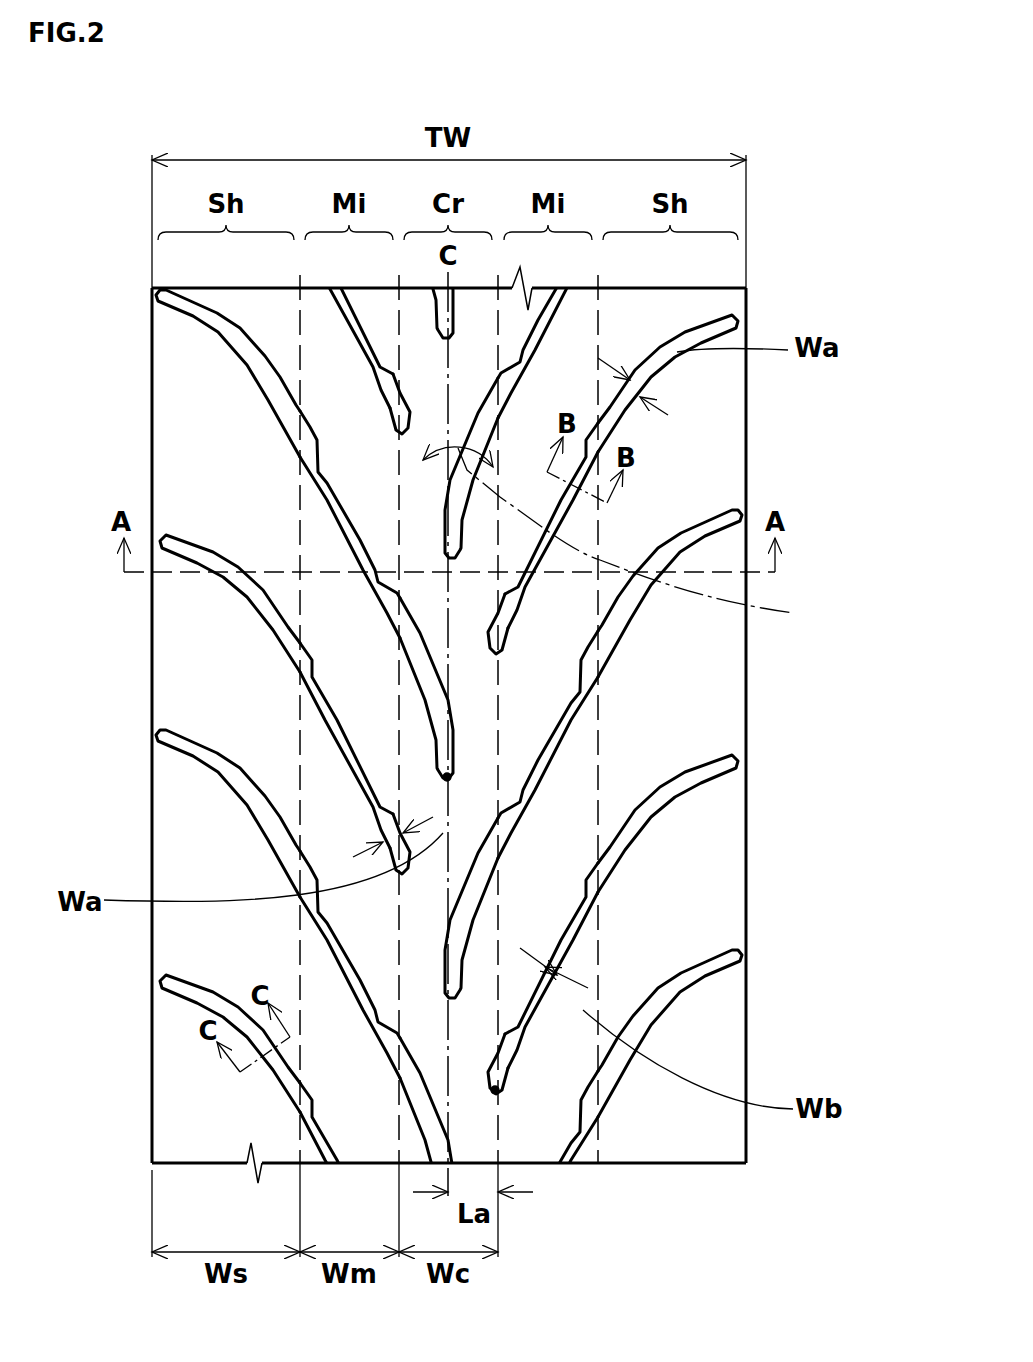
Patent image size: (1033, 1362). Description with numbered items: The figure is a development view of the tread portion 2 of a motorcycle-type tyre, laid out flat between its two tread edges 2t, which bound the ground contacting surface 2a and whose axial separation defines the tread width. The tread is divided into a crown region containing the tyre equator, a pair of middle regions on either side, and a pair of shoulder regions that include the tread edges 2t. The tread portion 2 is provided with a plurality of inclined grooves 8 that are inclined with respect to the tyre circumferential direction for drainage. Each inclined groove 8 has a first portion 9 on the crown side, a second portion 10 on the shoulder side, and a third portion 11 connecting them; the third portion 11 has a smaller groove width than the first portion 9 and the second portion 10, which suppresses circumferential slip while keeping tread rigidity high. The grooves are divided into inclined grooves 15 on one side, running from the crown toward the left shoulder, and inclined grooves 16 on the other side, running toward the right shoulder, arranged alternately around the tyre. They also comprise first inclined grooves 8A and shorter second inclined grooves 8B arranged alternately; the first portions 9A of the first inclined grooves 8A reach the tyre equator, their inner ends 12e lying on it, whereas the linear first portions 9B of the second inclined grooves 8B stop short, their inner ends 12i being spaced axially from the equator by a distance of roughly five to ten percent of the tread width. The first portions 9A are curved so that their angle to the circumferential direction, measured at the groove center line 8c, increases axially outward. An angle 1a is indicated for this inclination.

The tread portion 2 is at (718, 130).
The ground contacting surface 2a is at (680, 1130).
The tread edge 2t is at (152, 344).
The angle θ1a of groove 1a is at (267, 421).
The inclined groove 8 is at (62, 700).
The first inclined groove 8A is at (283, 407).
The second inclined groove 8B is at (250, 612).
The groove center line 8c is at (645, 539).
The first portion 9 is at (387, 826).
The first portion of first inclined groove 9A is at (455, 988).
The first portion of second inclined groove 9B is at (520, 1040).
The second portion 10 is at (288, 637).
The third portion 11 is at (340, 743).
The inner end of first inclined groove 12e is at (448, 780).
The inner end of second inclined groove 12i is at (496, 1092).
The inclined grooves on one side 15 is at (63, 458).
The inclined grooves on the other side 16 is at (833, 953).